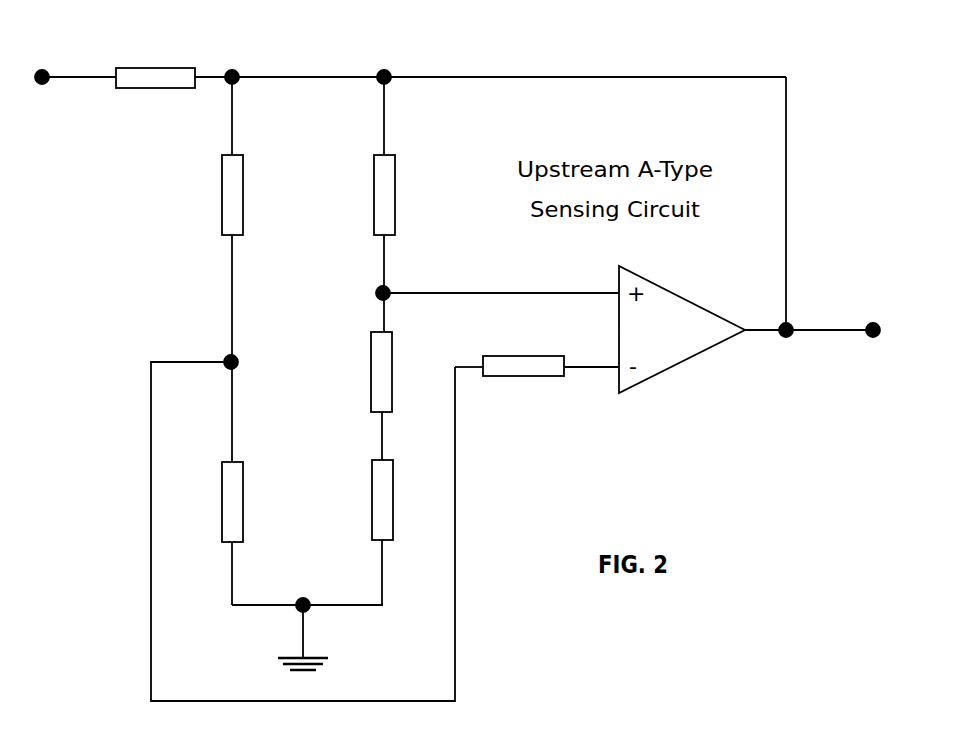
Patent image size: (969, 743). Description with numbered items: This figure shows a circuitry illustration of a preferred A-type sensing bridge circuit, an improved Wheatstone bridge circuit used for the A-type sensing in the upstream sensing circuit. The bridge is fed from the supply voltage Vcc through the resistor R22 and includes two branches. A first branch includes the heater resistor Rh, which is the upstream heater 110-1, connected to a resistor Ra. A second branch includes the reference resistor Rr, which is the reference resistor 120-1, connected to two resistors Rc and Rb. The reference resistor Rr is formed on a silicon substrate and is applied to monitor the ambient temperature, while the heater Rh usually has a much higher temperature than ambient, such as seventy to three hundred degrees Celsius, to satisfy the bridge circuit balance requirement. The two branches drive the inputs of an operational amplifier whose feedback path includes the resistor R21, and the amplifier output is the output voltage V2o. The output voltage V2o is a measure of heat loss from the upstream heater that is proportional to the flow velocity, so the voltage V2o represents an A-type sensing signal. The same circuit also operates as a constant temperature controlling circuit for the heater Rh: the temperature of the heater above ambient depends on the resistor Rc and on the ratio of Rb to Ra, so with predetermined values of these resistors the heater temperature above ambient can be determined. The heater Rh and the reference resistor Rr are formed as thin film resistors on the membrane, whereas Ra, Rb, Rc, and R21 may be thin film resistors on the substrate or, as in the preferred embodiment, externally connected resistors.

The heater resistor 110-1 is at (157, 502).
The reference resistor 120-1 is at (452, 500).
The heater resistor Rh is at (212, 502).
The reference resistor Rr is at (400, 500).
The resistor Ra is at (211, 195).
The resistor Rb is at (405, 195).
The resistor Rc is at (400, 372).
The resistor R21 is at (523, 389).
The resistor R22 is at (155, 101).
The supply voltage Vcc is at (60, 61).
The output voltage V2o is at (879, 317).